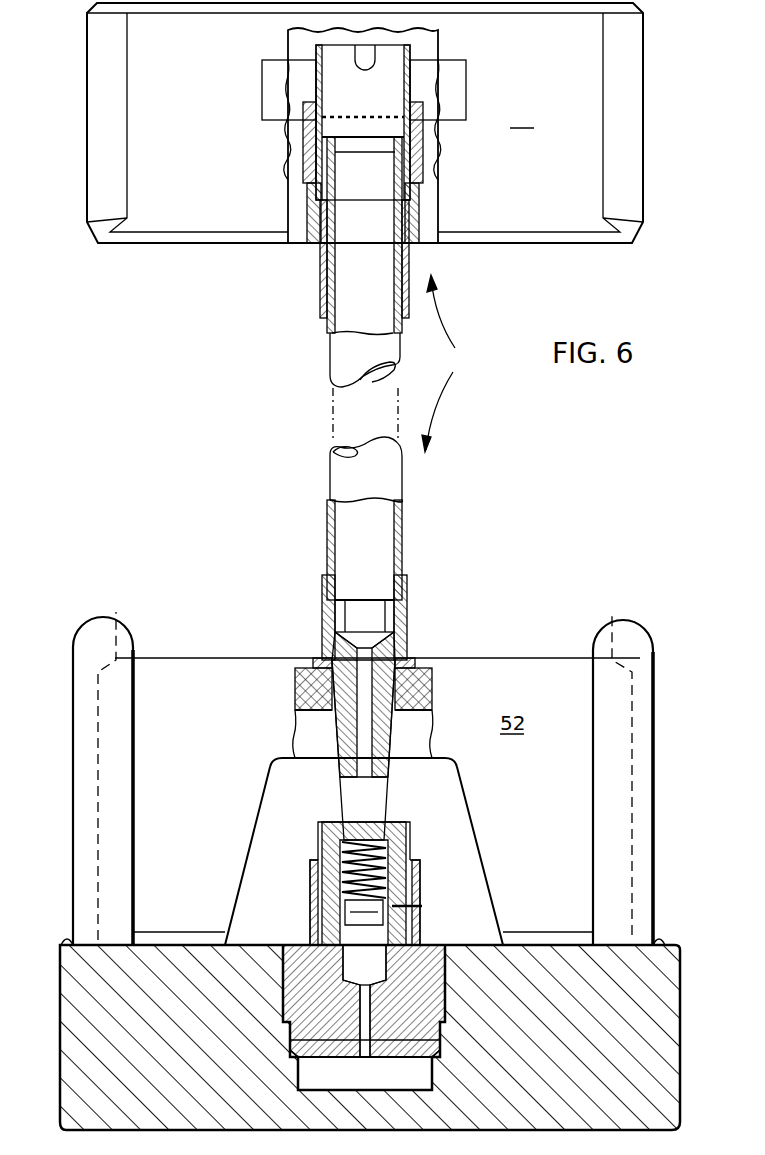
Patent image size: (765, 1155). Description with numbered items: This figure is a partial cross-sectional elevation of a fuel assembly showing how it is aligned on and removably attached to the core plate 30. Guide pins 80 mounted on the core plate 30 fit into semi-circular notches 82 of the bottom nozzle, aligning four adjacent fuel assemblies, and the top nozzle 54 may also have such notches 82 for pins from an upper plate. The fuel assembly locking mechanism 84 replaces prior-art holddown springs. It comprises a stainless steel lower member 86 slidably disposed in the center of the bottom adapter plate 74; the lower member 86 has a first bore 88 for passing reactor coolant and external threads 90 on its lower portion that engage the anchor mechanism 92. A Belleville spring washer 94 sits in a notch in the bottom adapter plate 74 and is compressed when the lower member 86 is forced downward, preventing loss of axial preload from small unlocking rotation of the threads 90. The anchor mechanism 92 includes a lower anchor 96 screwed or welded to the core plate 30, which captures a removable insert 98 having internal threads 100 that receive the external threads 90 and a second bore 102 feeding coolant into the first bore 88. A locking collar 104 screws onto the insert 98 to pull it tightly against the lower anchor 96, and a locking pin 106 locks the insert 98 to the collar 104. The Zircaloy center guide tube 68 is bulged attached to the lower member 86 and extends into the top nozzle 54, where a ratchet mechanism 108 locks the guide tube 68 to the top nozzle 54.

The core plate 30 is at (660, 1052).
The top nozzle 54 is at (365, 123).
The center guide tube 68 is at (345, 352).
The bottom adapter plate 74 is at (430, 660).
The guide pins 80 is at (73, 697).
The semi-circular notches 82 is at (103, 118).
The fuel assembly locking mechanism 84 is at (448, 363).
The lower member 86 is at (406, 578).
The first bore 88 is at (365, 765).
The external threads 90 is at (400, 822).
The anchor mechanism 92 is at (300, 921).
The Belleville spring washer 94 is at (318, 656).
The lower anchor 96 is at (433, 951).
The removable insert 98 is at (305, 1040).
The internal threads 100 is at (388, 886).
The second bore 102 is at (365, 1037).
The locking collar 104 is at (310, 880).
The locking pin 106 is at (422, 906).
The ratchet mechanism 108 is at (272, 158).